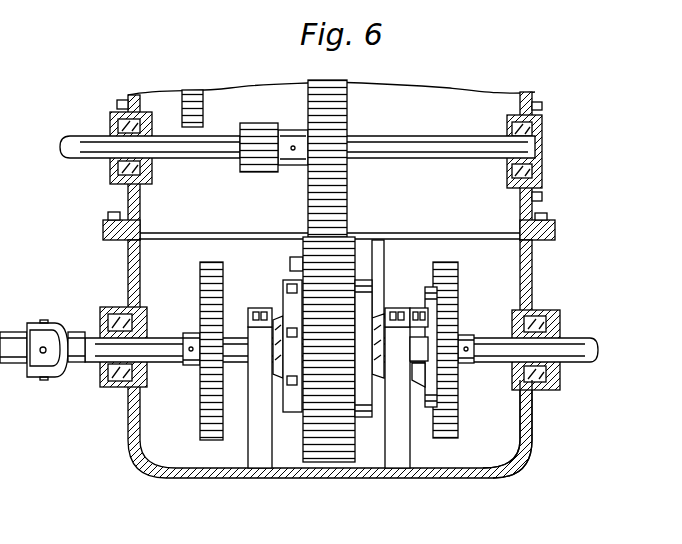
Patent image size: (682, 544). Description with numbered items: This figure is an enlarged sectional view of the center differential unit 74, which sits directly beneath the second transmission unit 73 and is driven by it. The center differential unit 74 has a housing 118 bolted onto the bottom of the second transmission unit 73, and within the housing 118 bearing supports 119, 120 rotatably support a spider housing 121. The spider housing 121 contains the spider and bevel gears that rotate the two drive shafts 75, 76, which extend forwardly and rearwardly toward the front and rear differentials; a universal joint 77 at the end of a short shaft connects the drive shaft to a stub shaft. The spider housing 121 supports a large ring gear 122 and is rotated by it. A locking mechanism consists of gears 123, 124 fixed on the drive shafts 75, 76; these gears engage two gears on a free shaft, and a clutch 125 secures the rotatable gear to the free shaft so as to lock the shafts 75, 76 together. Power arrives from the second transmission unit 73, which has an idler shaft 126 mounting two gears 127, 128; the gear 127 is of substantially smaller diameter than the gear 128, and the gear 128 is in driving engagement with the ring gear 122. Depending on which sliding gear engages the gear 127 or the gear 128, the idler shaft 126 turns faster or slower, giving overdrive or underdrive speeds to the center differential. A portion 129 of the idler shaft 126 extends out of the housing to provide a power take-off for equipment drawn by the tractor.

The second transmission unit 73 is at (455, 92).
The center differential unit 74 is at (170, 479).
The drive shaft 75 is at (598, 350).
The drive shaft 76 is at (97, 340).
The universal joint 77 is at (30, 357).
The housing 118 is at (522, 458).
The bearing support 119 is at (272, 460).
The bearing support 120 is at (402, 458).
The spider housing 121 is at (366, 300).
The ring gear 122 is at (310, 270).
The gear 123 is at (458, 318).
The gear 124 is at (205, 279).
The clutch 125 is at (455, 298).
The idler shaft 126 is at (412, 150).
The gear 127 is at (272, 114).
The gear 128 is at (340, 113).
The portion 129 is at (78, 140).